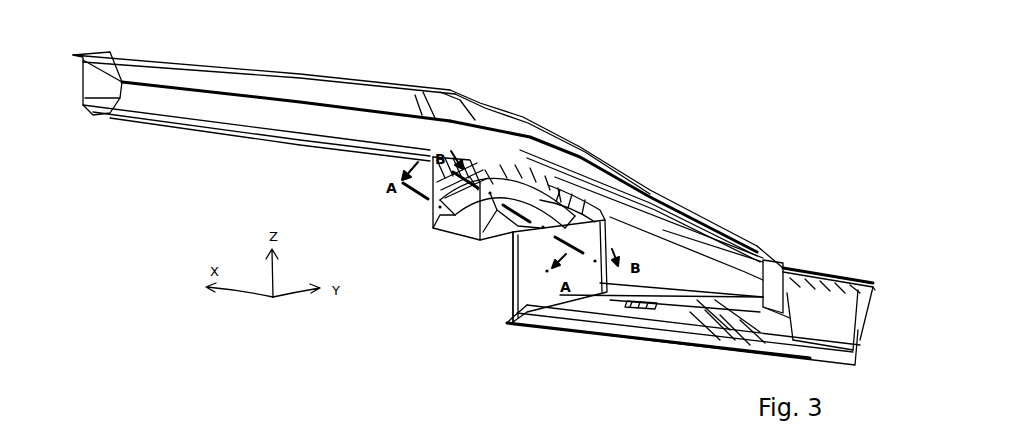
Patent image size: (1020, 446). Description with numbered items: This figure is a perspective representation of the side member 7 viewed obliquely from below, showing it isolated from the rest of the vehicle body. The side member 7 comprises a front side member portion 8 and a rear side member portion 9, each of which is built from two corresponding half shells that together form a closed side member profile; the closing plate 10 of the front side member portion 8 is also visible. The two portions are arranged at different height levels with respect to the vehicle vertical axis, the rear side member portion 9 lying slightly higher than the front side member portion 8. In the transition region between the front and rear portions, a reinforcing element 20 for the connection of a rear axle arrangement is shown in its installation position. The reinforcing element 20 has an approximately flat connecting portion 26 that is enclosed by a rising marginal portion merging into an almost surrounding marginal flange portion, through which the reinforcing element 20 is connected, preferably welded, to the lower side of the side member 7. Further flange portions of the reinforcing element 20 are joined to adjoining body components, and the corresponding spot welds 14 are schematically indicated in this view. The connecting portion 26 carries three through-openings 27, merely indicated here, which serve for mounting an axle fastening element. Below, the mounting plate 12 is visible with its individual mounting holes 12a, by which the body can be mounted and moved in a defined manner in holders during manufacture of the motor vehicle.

The side member 7 is at (528, 82).
The front side member portion 8 is at (840, 337).
The rear side member portion 9 is at (180, 110).
The closing plate 10 is at (738, 207).
The mounting plate 12 is at (667, 306).
The mounting holes 12a is at (643, 306).
The spot welds 14 is at (480, 235).
The reinforcing element 20 is at (470, 264).
The connecting portion 26 is at (552, 212).
The through-openings 27 is at (518, 197).